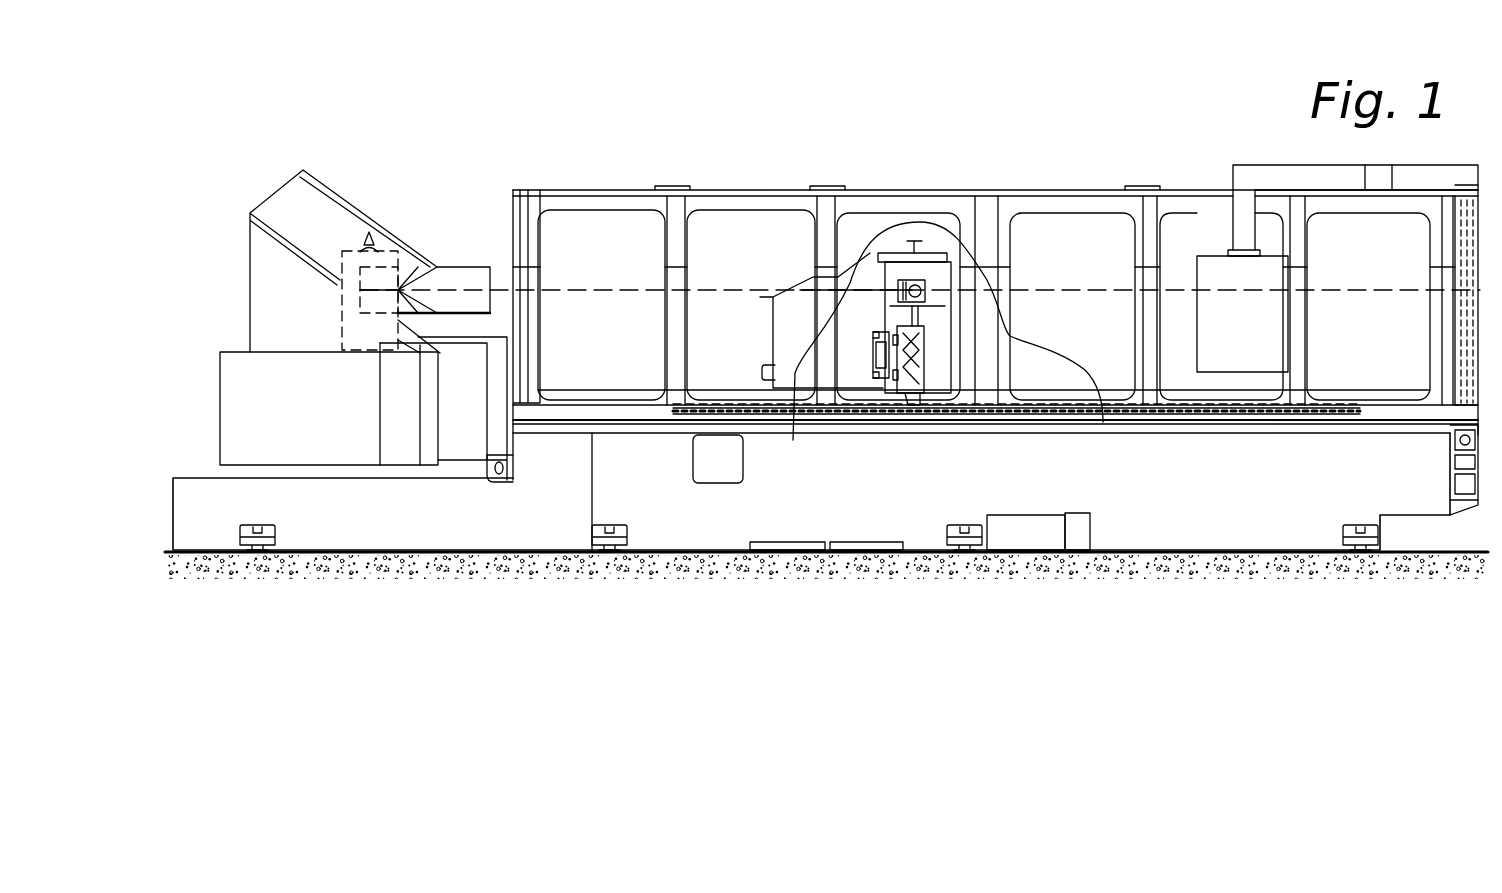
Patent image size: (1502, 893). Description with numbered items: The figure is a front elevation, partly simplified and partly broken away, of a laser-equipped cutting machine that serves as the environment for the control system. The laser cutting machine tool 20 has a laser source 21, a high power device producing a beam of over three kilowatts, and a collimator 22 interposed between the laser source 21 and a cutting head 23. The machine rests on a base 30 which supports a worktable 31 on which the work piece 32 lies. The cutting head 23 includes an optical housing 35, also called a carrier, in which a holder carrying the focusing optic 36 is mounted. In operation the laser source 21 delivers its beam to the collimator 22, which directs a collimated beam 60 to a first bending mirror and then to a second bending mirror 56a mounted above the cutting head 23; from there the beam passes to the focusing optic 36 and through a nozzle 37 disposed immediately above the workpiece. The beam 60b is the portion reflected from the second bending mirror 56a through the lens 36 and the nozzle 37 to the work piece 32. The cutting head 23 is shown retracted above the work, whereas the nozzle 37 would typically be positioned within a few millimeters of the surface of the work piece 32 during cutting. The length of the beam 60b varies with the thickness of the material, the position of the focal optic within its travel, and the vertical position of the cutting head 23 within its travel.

The laser cutting machine tool 20 is at (947, 147).
The laser source 21 is at (282, 193).
The collimator 22 is at (473, 265).
The cutting head 23 is at (962, 312).
The base 30 is at (1267, 494).
The worktable 31 is at (1061, 413).
The work piece 32 is at (1075, 410).
The optical housing 35 is at (924, 343).
The focusing optic 36 is at (925, 357).
The nozzle 37 is at (922, 398).
The second bending mirror 56a is at (916, 278).
The collimated beam 60 is at (628, 290).
The beam 60b is at (900, 319).